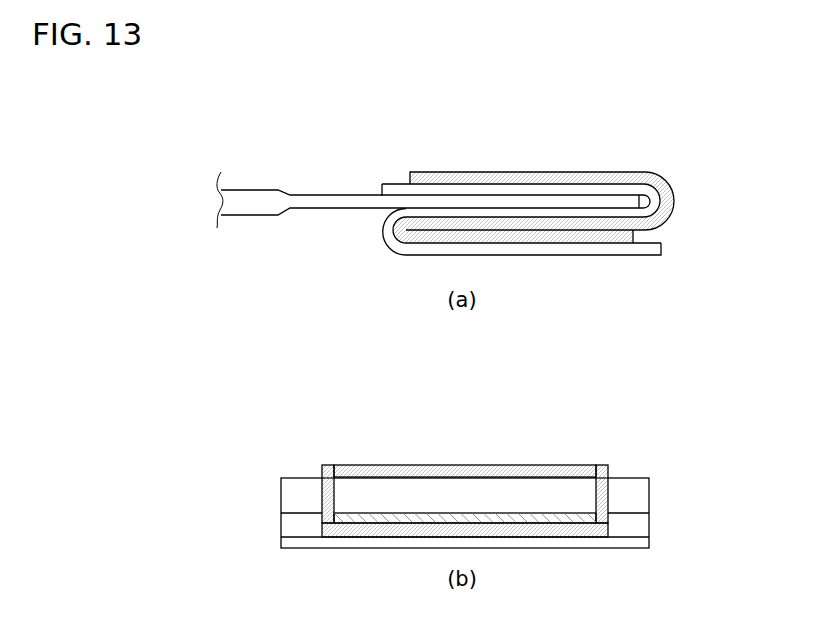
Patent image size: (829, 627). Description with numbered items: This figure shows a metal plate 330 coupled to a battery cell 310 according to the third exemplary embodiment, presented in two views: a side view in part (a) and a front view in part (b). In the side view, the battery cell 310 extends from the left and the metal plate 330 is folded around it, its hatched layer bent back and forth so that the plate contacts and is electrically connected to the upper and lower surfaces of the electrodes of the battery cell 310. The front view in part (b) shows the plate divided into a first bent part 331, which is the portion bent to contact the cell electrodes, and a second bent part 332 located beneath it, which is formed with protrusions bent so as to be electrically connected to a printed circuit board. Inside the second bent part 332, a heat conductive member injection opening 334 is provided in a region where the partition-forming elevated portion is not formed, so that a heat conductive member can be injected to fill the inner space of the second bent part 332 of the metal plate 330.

The battery cell 310 is at (326, 196).
The metal plate 330 is at (661, 248).
The first bent part 331 is at (656, 478).
The second bent part 332 is at (656, 513).
The heat conductive member injection opening 334 is at (352, 520).